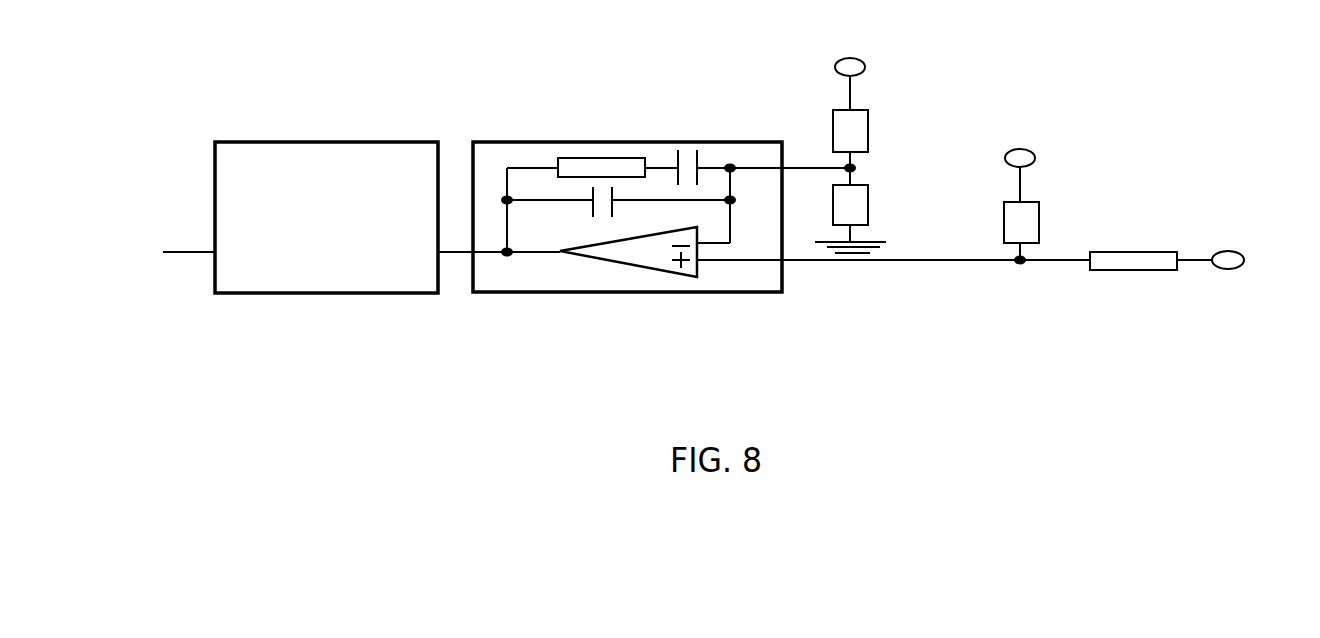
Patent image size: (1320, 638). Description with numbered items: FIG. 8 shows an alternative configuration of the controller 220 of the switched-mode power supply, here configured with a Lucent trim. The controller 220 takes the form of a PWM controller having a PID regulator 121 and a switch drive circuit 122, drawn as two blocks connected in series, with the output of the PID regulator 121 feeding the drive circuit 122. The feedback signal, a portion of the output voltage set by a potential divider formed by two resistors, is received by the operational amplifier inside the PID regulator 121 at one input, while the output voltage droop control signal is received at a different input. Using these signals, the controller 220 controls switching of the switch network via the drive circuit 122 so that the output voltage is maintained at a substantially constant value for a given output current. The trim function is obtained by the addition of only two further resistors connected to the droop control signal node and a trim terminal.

The PID regulator 121 is at (636, 110).
The switch drive circuit 122 is at (350, 127).
The controller 220 is at (990, 92).